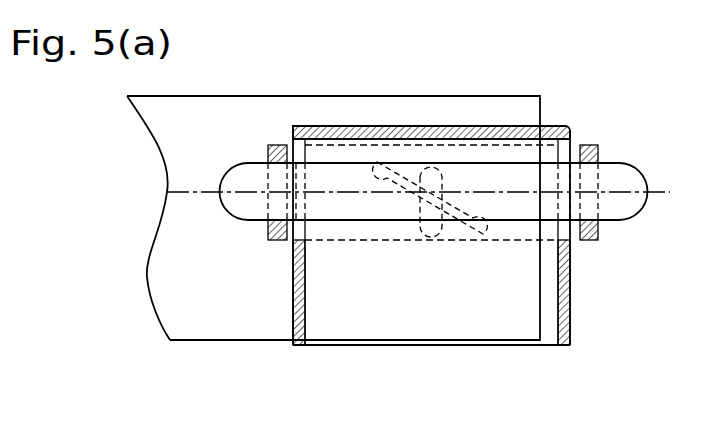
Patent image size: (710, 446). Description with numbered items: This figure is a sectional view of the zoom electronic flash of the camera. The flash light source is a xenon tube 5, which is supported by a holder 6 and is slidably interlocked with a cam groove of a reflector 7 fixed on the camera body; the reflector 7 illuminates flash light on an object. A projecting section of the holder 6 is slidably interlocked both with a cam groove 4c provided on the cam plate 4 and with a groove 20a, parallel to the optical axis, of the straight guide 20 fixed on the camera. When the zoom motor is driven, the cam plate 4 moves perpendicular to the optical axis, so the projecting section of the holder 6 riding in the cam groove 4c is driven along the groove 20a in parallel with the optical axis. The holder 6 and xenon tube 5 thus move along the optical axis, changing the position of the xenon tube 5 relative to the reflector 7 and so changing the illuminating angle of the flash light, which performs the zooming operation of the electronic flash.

The cam plate 4 is at (348, 201).
The straight guide 20 is at (488, 118).
The cam groove 4c is at (379, 172).
The groove 20a is at (420, 236).
The xenon tube 5 is at (621, 216).
The holder 6 is at (600, 138).
The reflector 7 is at (560, 134).